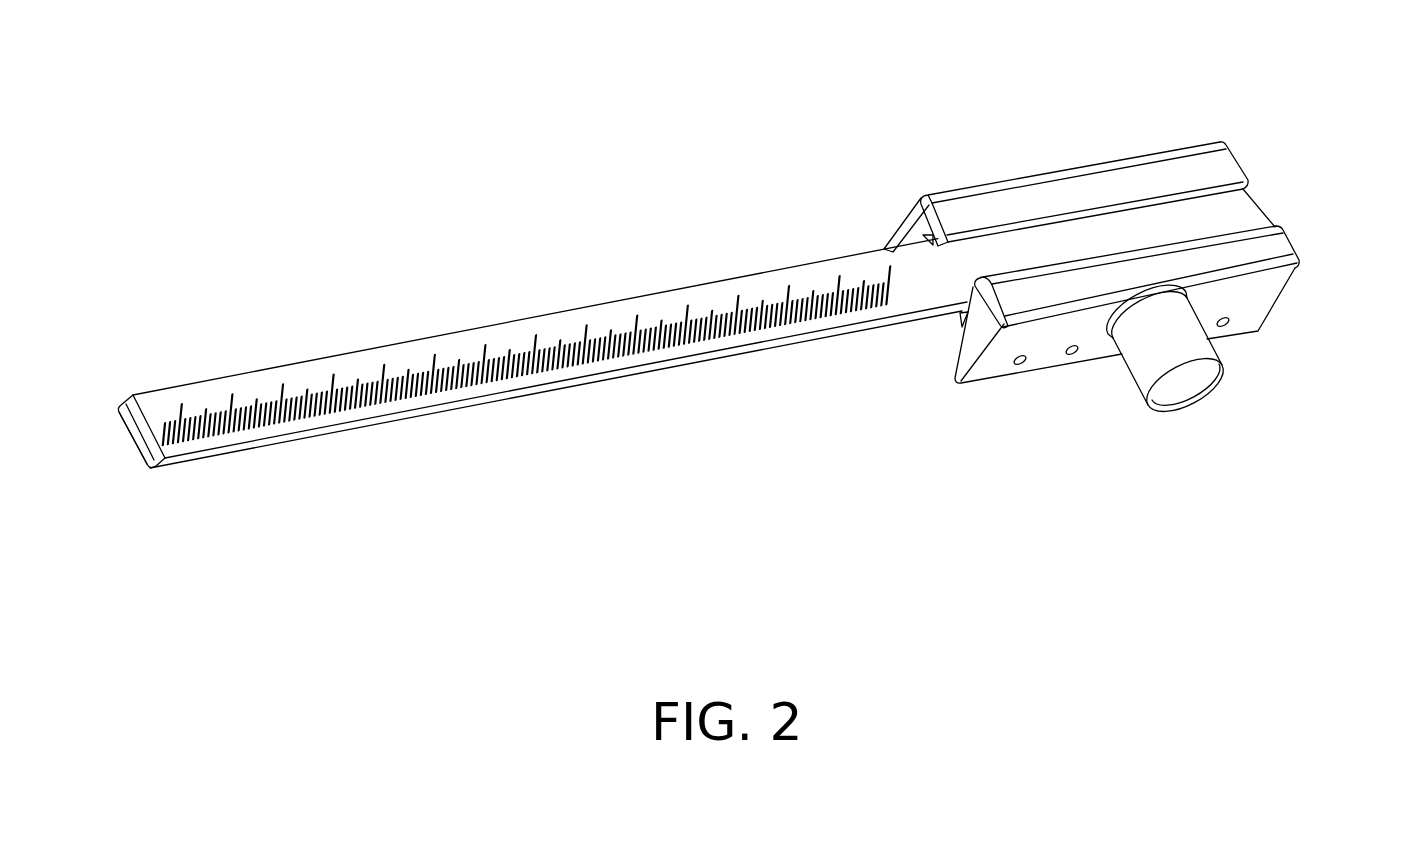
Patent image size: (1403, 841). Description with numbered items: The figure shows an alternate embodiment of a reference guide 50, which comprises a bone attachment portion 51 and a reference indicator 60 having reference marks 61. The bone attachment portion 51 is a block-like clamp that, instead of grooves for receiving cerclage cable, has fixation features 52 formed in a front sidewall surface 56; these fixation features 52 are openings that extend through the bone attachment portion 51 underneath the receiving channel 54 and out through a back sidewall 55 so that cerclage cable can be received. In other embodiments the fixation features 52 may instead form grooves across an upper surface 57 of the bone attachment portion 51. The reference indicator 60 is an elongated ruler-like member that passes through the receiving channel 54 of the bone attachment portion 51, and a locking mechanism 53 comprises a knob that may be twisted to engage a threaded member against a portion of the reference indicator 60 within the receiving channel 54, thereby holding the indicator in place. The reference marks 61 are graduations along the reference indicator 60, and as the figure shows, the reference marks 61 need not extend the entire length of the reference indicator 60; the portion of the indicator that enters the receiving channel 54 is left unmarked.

The reference guide 50 is at (528, 183).
The bone attachment portion 51 is at (1157, 137).
The fixation features 52 is at (1225, 323).
The locking mechanism 53 is at (1185, 395).
The receiving channel 54 is at (1247, 202).
The back sidewall 55 is at (900, 229).
The front sidewall surface 56 is at (988, 377).
The upper surface 57 is at (1263, 250).
The reference indicator 60 is at (133, 393).
The reference marks 61 is at (150, 467).